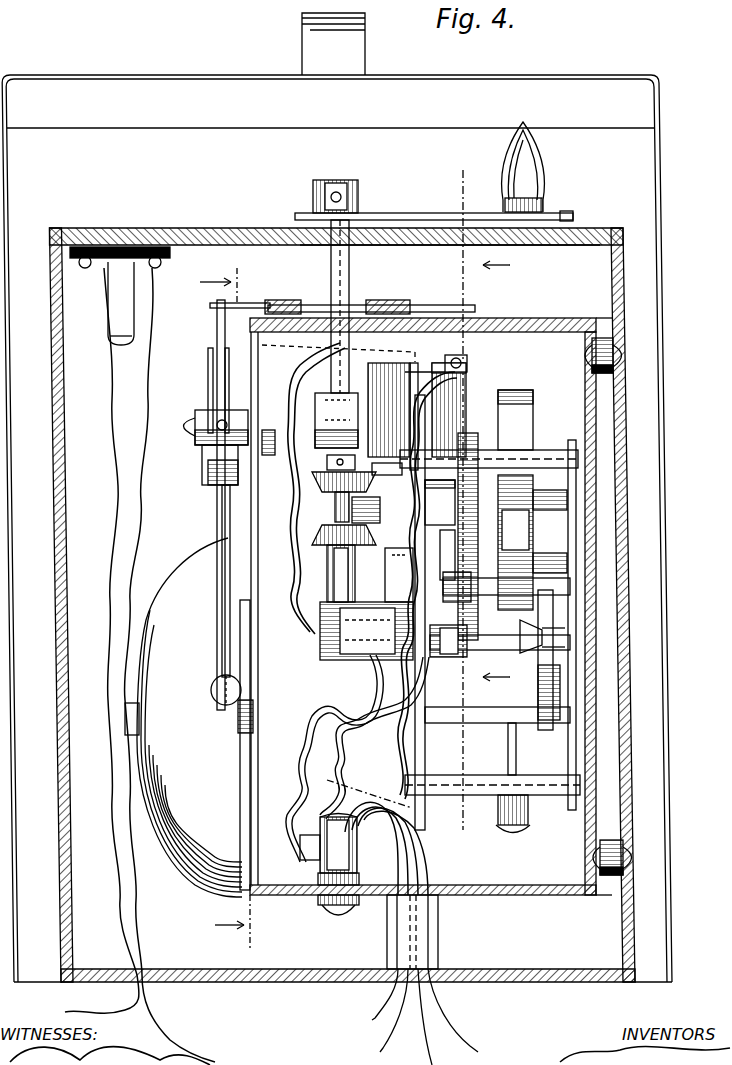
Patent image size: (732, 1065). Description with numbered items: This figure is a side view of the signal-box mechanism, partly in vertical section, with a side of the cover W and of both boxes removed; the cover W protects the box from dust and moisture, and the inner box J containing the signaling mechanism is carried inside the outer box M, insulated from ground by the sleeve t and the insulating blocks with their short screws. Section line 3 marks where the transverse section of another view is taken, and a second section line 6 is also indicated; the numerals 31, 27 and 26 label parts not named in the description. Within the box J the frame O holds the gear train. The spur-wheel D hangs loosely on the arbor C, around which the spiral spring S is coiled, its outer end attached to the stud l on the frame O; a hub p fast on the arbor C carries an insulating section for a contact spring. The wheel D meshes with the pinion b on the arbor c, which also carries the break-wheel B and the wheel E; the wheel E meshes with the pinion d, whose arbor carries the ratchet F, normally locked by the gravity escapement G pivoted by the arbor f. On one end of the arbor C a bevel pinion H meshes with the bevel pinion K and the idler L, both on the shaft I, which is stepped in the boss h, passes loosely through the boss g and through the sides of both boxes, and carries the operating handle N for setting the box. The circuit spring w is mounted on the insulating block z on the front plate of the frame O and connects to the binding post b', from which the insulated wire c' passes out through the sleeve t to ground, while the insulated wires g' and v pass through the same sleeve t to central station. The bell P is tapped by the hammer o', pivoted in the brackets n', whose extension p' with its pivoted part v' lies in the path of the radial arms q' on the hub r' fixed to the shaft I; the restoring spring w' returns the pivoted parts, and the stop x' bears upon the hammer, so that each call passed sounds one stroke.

The cover W is at (661, 240).
The operating handle N is at (417, 212).
The outer box M is at (416, 245).
The section line 6 is at (486, 502).
The section line 3 is at (233, 607).
The lamp 31 is at (121, 303).
The lamp wire 27 is at (102, 640).
The lamp wire 26 is at (169, 665).
The box J is at (500, 318).
The shaft I is at (345, 276).
The hub r' is at (370, 297).
The radial arm q' is at (240, 297).
The boss g is at (328, 420).
The bevel pinion K is at (325, 463).
The idler L is at (320, 540).
The bevel pinion H is at (372, 523).
The break-wheel B is at (392, 580).
The boss h is at (320, 644).
The circuit spring w is at (467, 357).
The insulating block z is at (436, 370).
The frame O is at (415, 746).
The spur-wheel D is at (478, 432).
The spiral spring S is at (533, 432).
The arbor C is at (490, 500).
The stud l is at (546, 553).
The hub p is at (440, 502).
The wheel E is at (439, 555).
The pinion b is at (506, 601).
The arbor c is at (479, 567).
The pinion d is at (455, 658).
The ratchet F is at (538, 656).
The gravity escapement G is at (540, 690).
The arbor f is at (490, 723).
The pivoted part of hammer extension v' is at (207, 505).
The hammer extension p' is at (199, 390).
The restoring spring w' is at (206, 390).
The bracket n' is at (212, 447).
The stop x' is at (253, 660).
The hammer o' is at (210, 594).
The bell P is at (185, 885).
The binding post b' is at (339, 865).
The sleeve t is at (438, 934).
The insulated wire c' is at (383, 994).
The insulated wire g' is at (384, 1010).
The insulated wire v is at (460, 1010).